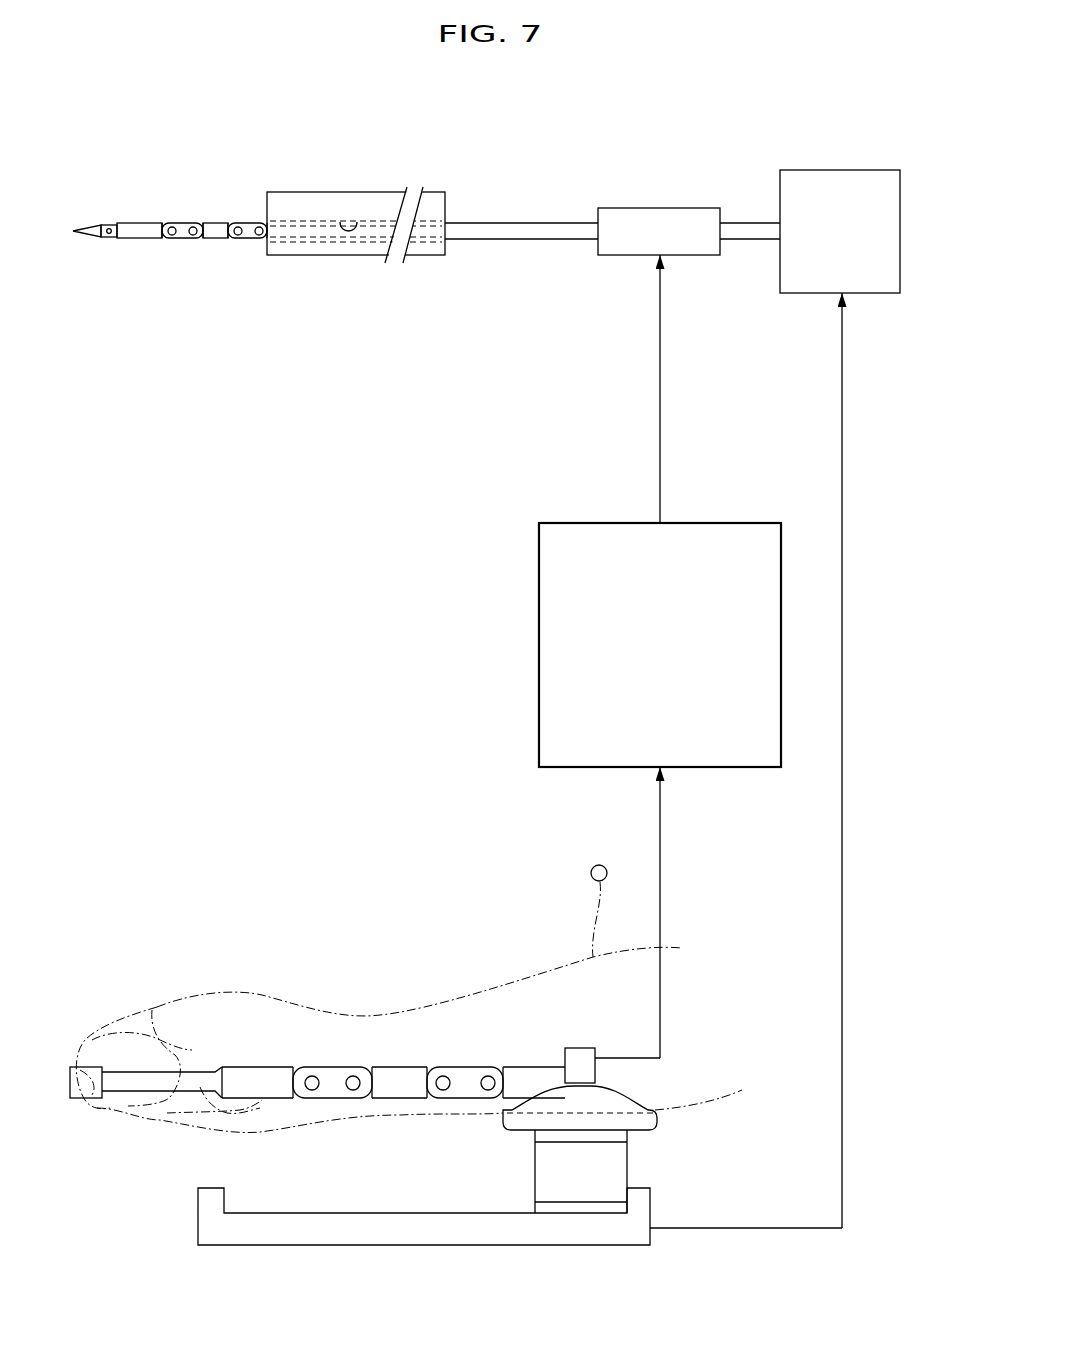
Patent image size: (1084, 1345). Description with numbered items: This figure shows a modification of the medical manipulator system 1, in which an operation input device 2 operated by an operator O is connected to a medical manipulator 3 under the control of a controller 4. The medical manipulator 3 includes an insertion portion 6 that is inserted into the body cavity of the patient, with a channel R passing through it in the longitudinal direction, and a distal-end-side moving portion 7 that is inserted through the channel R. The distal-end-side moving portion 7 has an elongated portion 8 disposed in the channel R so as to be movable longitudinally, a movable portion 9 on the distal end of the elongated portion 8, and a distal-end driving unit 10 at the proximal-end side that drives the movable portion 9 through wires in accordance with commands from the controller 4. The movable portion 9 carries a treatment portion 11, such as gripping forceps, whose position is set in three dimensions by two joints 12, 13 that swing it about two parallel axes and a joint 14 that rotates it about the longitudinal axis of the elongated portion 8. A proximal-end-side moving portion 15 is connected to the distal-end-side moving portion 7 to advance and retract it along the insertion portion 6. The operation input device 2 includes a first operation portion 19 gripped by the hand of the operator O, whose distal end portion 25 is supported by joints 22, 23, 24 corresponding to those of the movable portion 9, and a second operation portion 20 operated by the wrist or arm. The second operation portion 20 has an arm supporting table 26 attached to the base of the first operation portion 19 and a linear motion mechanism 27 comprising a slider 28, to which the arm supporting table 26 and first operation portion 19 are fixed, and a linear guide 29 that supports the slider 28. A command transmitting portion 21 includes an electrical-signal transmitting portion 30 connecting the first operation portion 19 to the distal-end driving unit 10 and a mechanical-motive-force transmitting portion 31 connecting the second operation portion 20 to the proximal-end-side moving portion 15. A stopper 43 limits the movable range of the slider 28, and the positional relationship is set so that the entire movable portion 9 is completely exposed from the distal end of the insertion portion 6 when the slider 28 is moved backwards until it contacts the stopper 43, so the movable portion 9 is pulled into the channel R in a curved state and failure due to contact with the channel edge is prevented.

The medical manipulator system 1 is at (218, 523).
The operation input device 2 is at (167, 927).
The medical manipulator 3 is at (758, 130).
The controller 4 is at (538, 638).
The insertion portion 6 is at (388, 192).
The distal-end-side moving portion 7 is at (620, 356).
The elongated portion 8 is at (537, 240).
The movable portion 9 is at (224, 254).
The distal-end driving unit 10 is at (610, 256).
The treatment portion 11 is at (90, 238).
The joint 12 is at (165, 218).
The joint 13 is at (232, 218).
The joint 14 is at (260, 218).
The proximal-end-side moving portion 15 is at (832, 170).
The first operation portion 19 is at (382, 1030).
The second operation portion 20 is at (667, 1093).
The command transmitting portion 21 is at (793, 408).
The joint 22 is at (312, 1062).
The joint 23 is at (443, 1062).
The joint 24 is at (497, 1063).
The distal end portion 25 is at (147, 1090).
The arm supporting table 26 is at (622, 1095).
The linear motion mechanism 27 is at (448, 1122).
The slider 28 is at (538, 1152).
The linear guide 29 is at (513, 1212).
The electrical-signal transmitting portion 30 is at (690, 500).
The mechanical-motive-force transmitting portion 31 is at (835, 490).
The stopper 43 is at (640, 1188).
The channel R is at (355, 221).